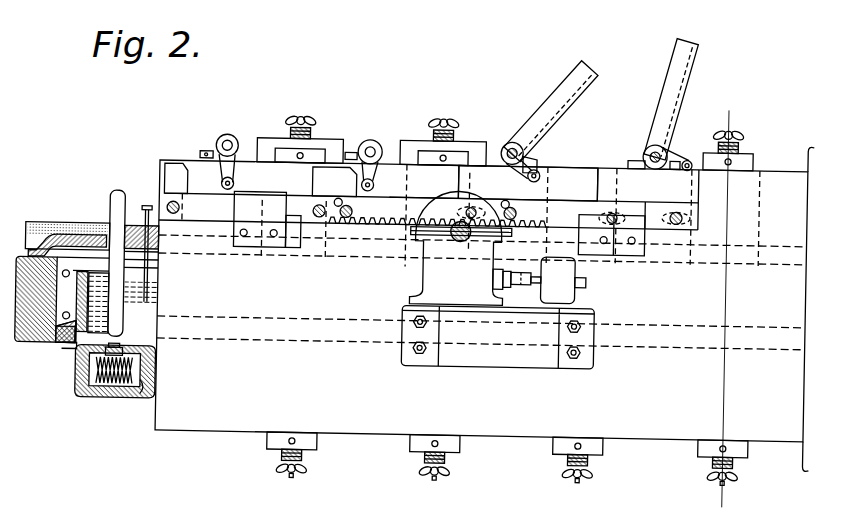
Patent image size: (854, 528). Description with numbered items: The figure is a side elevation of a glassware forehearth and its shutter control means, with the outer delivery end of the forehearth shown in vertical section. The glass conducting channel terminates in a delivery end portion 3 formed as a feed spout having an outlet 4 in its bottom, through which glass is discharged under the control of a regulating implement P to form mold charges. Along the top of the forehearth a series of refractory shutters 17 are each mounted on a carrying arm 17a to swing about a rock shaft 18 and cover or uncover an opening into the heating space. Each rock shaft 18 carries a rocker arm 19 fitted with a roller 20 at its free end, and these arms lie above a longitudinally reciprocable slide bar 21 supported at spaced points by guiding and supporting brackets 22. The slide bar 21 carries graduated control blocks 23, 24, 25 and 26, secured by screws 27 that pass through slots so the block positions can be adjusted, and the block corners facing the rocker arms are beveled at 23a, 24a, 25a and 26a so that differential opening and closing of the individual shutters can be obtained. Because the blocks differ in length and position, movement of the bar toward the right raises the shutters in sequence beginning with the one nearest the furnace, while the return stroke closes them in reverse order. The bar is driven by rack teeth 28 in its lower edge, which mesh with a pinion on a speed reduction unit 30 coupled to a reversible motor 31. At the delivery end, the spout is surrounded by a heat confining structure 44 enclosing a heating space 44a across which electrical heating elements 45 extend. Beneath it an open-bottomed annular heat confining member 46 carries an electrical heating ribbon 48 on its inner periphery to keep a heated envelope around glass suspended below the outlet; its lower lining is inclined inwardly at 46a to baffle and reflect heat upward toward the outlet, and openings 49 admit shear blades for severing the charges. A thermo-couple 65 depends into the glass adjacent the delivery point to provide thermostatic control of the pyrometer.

The outer end portion 3 is at (62, 368).
The outlet 4 is at (82, 365).
The implement P is at (118, 194).
The shutter 17 is at (553, 86).
The carrying arm 17a is at (533, 130).
The rock shaft 18 is at (511, 140).
The rocker arm 19 is at (514, 177).
The roller 20 is at (537, 165).
The slide bar 21 is at (390, 203).
The guiding and supporting brackets 22 is at (256, 246).
The control block 23 is at (688, 184).
The beveled portion 23a is at (696, 166).
The control block 24 is at (480, 171).
The beveled portion 24a is at (523, 183).
The control block 25 is at (322, 166).
The beveled portion 25a is at (300, 151).
The control block 26 is at (168, 166).
The beveled portion 26a is at (183, 165).
The screws 27 is at (181, 207).
The rack teeth 28 is at (438, 238).
The speed reduction unit 30 is at (438, 240).
The reversible motor 31 is at (565, 286).
The heat confining structure 44 is at (31, 262).
The heating space 44a is at (64, 269).
The electrical heating elements 45 is at (63, 326).
The annular heat confining member 46 is at (98, 386).
The inclined inner wall 46a is at (130, 386).
The electrical heating ribbon 48 is at (124, 376).
The openings 49 is at (114, 370).
The thermo-couple 65 is at (152, 268).